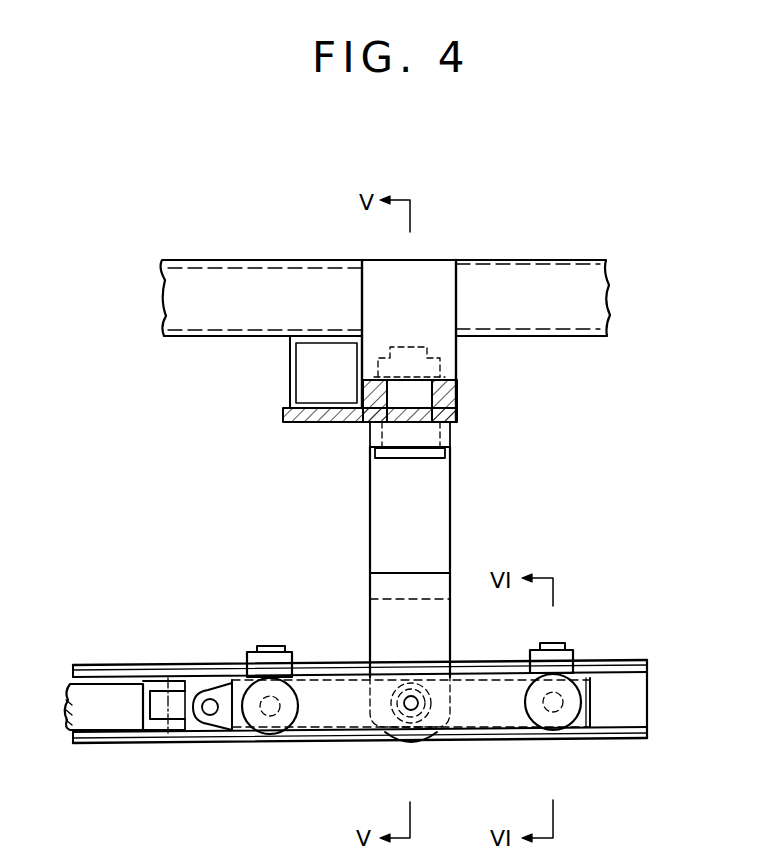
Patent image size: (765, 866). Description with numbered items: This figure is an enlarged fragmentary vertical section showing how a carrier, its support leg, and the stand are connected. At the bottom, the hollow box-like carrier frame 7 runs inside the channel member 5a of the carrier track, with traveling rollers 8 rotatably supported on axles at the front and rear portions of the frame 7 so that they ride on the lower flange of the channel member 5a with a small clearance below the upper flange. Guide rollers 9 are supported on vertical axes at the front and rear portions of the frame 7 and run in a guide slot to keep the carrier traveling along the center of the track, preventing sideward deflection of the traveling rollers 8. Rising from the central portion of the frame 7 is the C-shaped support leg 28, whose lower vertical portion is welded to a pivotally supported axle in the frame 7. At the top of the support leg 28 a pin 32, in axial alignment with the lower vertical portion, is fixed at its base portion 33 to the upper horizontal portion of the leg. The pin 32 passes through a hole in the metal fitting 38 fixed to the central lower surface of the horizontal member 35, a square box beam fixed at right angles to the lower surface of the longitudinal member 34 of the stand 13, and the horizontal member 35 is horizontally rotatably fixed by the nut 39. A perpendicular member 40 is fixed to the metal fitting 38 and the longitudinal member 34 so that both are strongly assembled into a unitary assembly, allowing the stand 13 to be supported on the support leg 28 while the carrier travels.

The stand 13 is at (300, 258).
The longitudinal member 34 is at (565, 258).
The perpendicular member 40 is at (456, 297).
The nut 39 is at (437, 360).
The horizontal member 35 is at (290, 372).
The pin 32 is at (420, 396).
The base portion 33 is at (425, 434).
The metal fitting 38 is at (313, 423).
The support leg 28 is at (452, 505).
The guide roller 9 is at (262, 663).
The traveling roller 8 is at (272, 726).
The carrier frame 7 is at (323, 714).
The channel member 5a is at (638, 720).